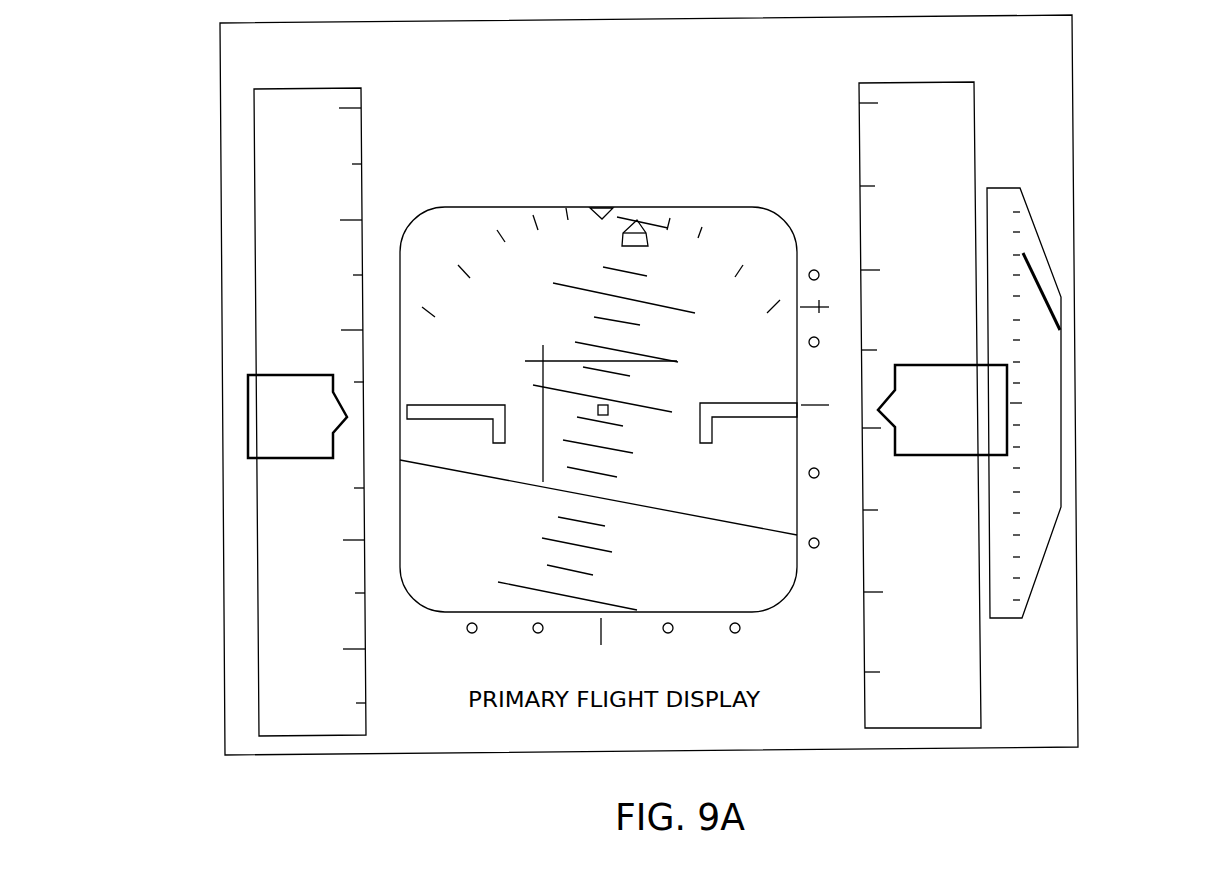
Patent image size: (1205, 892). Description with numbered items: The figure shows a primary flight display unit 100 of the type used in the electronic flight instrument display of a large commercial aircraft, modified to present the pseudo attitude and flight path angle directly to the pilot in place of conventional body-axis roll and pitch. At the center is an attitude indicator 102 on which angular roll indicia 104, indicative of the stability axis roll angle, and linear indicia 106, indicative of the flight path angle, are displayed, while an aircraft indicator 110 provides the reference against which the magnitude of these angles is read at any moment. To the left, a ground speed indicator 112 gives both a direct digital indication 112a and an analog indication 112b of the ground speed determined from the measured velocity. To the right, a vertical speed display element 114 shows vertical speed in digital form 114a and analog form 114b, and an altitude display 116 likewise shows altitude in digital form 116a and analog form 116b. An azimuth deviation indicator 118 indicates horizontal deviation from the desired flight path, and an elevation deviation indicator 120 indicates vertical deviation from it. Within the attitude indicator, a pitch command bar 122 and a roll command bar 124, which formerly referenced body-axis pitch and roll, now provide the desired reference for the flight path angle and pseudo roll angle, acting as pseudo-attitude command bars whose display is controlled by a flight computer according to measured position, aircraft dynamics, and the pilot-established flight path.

The primary flight display unit 100 is at (805, 58).
The attitude indicator 102 is at (660, 250).
The angular roll indicia 104 is at (458, 267).
The linear indicia 106 is at (677, 305).
The aircraft indicator 110 is at (745, 402).
The ground speed indicator 112 is at (258, 579).
The digital indication 112a is at (248, 441).
The analog indication 112b is at (257, 496).
The vertical speed display element 114 is at (1032, 357).
The digital vertical speed indication 114a is at (1077, 143).
The analog vertical speed indication 114b is at (1028, 285).
The altitude display 116 is at (980, 643).
The digital altitude indication 116a is at (1010, 405).
The analog altitude indication 116b is at (965, 472).
The azimuth deviation indicator 118 is at (602, 642).
The elevation deviation indicator 120 is at (827, 405).
The pitch command bar 122 is at (630, 376).
The roll command bar 124 is at (543, 463).